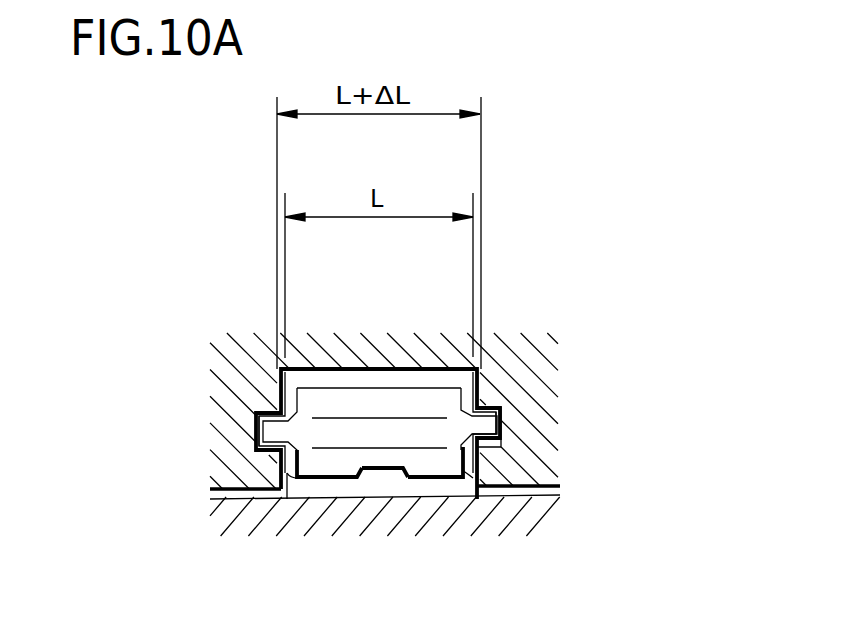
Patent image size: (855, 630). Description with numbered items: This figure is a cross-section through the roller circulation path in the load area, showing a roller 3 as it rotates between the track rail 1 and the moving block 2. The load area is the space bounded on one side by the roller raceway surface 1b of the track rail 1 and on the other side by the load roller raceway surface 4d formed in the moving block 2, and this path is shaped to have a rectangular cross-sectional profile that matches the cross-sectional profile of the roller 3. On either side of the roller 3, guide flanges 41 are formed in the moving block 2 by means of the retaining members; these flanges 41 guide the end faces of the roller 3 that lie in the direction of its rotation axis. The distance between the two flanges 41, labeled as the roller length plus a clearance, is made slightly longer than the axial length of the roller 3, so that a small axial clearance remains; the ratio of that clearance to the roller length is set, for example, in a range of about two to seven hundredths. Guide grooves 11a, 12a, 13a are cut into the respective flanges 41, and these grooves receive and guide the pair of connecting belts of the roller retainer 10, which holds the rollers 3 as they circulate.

The track rail 1 is at (530, 514).
The roller raceway surface 1b is at (380, 482).
The moving block 2 is at (435, 358).
The roller 3 is at (326, 484).
The load roller raceway surface 4d is at (357, 402).
The roller retainer 10 is at (425, 470).
The guide groove 11a is at (270, 410).
The guide groove 12a is at (593, 368).
The guide groove 13a is at (434, 394).
The guide flange 41 is at (298, 486).